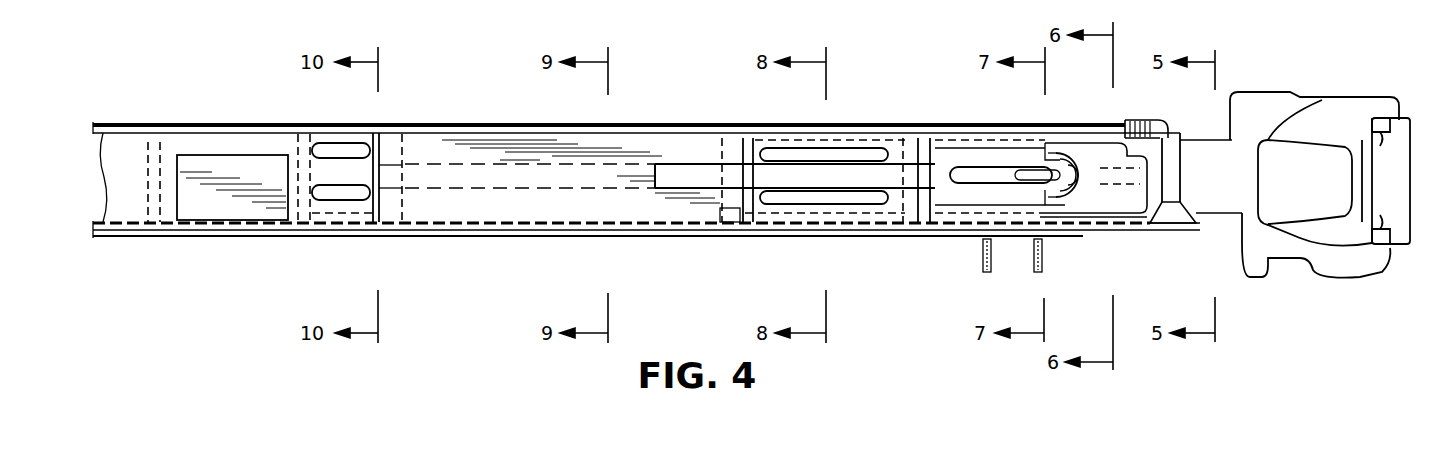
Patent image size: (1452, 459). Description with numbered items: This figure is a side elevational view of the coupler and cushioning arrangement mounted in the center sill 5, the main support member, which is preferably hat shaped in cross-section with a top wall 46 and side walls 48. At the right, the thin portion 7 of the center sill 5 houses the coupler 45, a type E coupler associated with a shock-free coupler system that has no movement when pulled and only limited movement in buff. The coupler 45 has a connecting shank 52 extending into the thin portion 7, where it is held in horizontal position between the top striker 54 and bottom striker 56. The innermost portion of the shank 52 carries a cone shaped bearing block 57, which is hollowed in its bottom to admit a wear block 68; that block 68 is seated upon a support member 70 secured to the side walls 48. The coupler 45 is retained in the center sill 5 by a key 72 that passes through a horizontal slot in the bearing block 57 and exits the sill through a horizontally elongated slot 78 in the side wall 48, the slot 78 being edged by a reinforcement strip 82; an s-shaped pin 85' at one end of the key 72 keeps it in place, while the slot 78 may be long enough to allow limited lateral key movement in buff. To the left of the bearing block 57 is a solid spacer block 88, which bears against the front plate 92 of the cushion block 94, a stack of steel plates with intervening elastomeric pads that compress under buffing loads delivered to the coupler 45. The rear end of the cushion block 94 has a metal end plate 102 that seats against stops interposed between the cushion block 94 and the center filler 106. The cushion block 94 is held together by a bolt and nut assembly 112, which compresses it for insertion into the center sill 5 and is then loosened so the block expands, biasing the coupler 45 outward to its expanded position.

The center sill 5 is at (879, 126).
The thin portion 7 is at (985, 133).
The coupler 45 is at (1318, 100).
The top wall 46 is at (682, 128).
The side walls 48 is at (475, 150).
The connecting shank 52 is at (1187, 150).
The top striker 54 is at (1151, 122).
The bottom striker 56 is at (1174, 226).
The bearing block 57 is at (985, 208).
The wear block 68 is at (1020, 213).
The support member 70 is at (1052, 238).
The key 72 is at (1091, 205).
The horizontally elongated slot 78 is at (975, 172).
The reinforcement strip 82 is at (965, 196).
The s-shaped pin 85' is at (1066, 143).
The spacer block 88 is at (897, 213).
The front plate 92 is at (738, 210).
The cushion block 94 is at (552, 213).
The end plate 102 is at (392, 137).
The center filler 106 is at (252, 167).
The bolt and nut assembly 112 is at (524, 170).